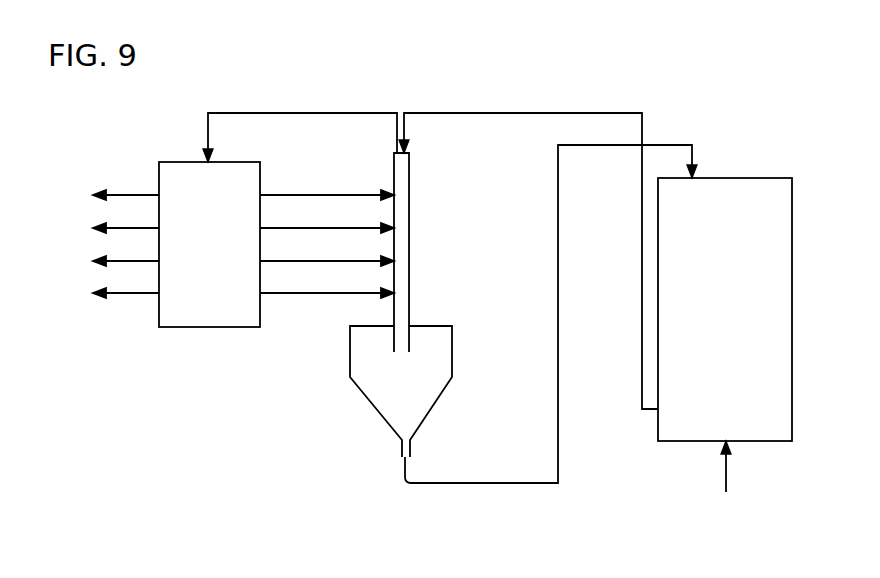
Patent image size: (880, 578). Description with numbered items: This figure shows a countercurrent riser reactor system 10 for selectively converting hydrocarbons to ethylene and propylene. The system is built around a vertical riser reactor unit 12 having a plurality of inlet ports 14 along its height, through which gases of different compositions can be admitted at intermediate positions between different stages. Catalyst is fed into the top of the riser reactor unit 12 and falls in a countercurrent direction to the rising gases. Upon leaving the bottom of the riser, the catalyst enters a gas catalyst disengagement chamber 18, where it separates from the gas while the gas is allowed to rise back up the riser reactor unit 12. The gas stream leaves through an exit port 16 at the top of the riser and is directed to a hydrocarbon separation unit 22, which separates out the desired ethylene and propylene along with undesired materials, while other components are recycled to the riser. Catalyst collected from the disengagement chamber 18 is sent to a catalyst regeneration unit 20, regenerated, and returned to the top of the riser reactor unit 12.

The countercurrent riser reactor system 10 is at (746, 148).
The riser reactor unit 12 is at (409, 242).
The inlet ports 14 is at (374, 296).
The exit port 16 is at (394, 152).
The gas catalyst disengagement chamber 18 is at (425, 358).
The catalyst regeneration unit 20 is at (717, 319).
The hydrocarbon separation unit 22 is at (196, 255).